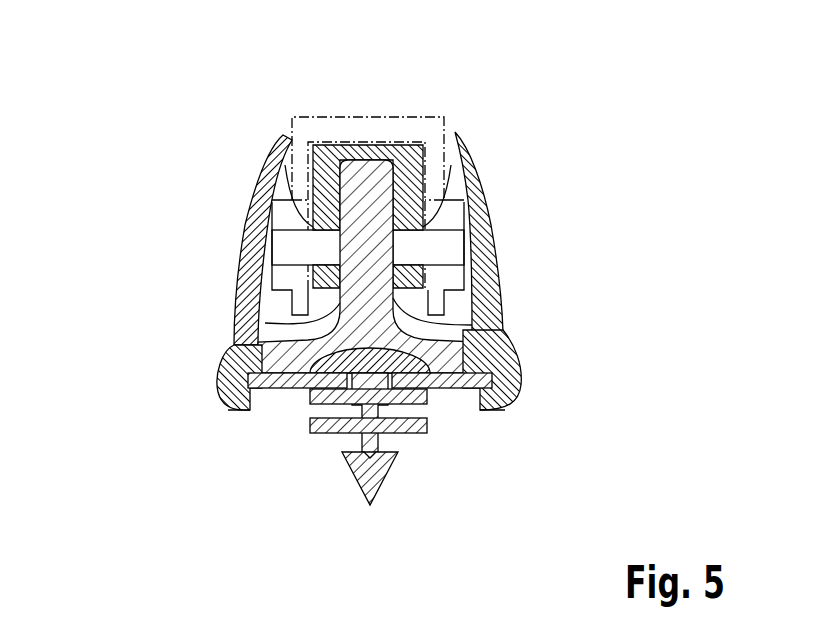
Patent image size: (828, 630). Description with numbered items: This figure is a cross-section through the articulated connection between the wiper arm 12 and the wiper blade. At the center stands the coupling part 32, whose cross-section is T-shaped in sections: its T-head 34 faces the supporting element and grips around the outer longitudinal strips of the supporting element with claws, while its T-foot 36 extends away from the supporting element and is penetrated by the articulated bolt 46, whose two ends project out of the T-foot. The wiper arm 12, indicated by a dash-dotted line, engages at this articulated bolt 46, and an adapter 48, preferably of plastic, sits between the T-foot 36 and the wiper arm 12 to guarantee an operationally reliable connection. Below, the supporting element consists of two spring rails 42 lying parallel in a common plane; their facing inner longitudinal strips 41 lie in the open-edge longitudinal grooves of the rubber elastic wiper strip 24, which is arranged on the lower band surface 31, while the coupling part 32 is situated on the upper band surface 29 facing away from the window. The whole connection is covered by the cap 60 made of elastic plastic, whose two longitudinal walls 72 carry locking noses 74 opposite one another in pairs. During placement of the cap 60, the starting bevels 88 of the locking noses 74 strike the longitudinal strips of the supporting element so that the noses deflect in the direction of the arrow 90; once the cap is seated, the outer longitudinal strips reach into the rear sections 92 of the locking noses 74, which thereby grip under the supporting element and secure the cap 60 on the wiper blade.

The wiper arm 12 is at (358, 117).
The wiper strip 24 is at (333, 449).
The upper band surface 29 is at (235, 325).
The lower band surface 31 is at (280, 389).
The coupling part 32 is at (497, 290).
The T-head 34 is at (500, 325).
The T-foot 36 is at (372, 183).
The inner longitudinal strips 41 is at (297, 389).
The spring rails 42 is at (272, 389).
The articulated bolt 46 is at (490, 205).
The adapter 48 is at (333, 165).
The cap 60 is at (496, 153).
The longitudinal walls 72 is at (250, 232).
The locking noses 74 is at (266, 389).
The starting bevels 88 is at (252, 411).
The arrow 90 is at (187, 395).
The rear sections 92 is at (218, 388).